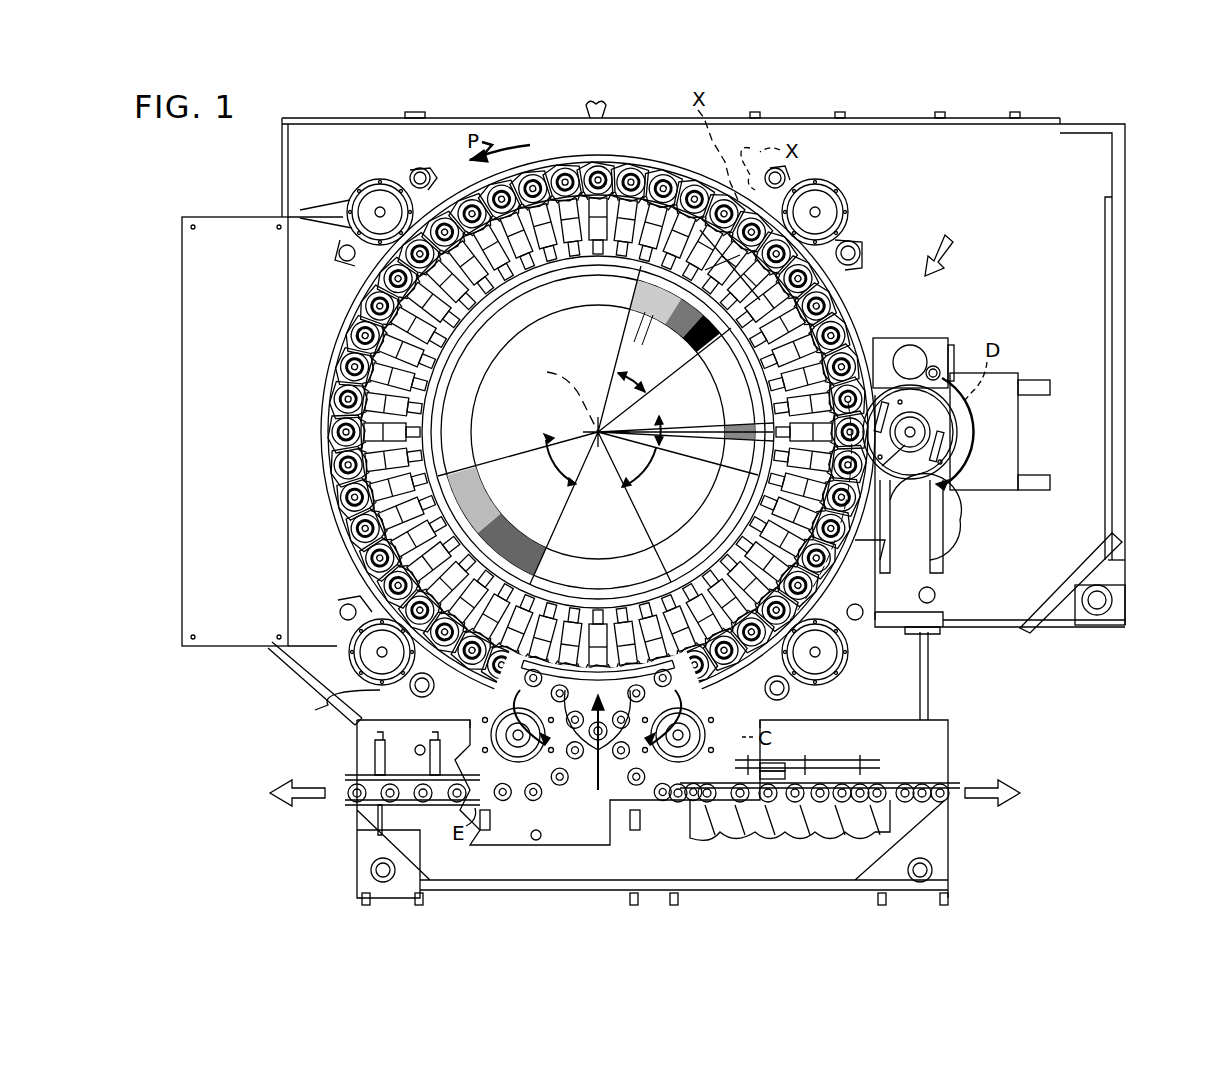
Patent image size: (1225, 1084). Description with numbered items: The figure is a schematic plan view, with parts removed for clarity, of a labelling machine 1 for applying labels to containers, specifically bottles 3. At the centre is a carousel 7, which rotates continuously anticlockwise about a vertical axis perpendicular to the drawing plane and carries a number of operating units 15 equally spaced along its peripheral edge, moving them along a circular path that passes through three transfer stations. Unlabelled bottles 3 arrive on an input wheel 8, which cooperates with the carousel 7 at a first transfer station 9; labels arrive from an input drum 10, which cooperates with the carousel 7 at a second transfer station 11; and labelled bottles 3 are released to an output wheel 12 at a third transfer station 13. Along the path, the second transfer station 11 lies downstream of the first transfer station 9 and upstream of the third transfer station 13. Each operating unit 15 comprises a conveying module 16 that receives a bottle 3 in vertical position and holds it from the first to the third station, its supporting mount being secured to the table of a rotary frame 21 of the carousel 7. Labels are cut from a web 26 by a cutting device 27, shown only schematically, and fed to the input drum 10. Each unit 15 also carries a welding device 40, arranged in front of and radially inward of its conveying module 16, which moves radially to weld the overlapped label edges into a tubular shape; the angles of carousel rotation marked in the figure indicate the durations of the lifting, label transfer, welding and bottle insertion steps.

The labelling machine 1 is at (1163, 177).
The bottles 3 is at (768, 804).
The carousel 7 is at (312, 376).
The input wheel 8 is at (670, 764).
The first transfer station 9 is at (790, 692).
The input drum 10 is at (962, 397).
The second transfer station 11 is at (905, 448).
The output wheel 12 is at (510, 766).
The third transfer station 13 is at (328, 700).
The operating units 15 is at (872, 504).
The conveying module 16 is at (850, 540).
The rotary frame 21 is at (598, 800).
The web 26 is at (908, 338).
The cutting device 27 is at (926, 354).
The welding device 40 is at (722, 266).